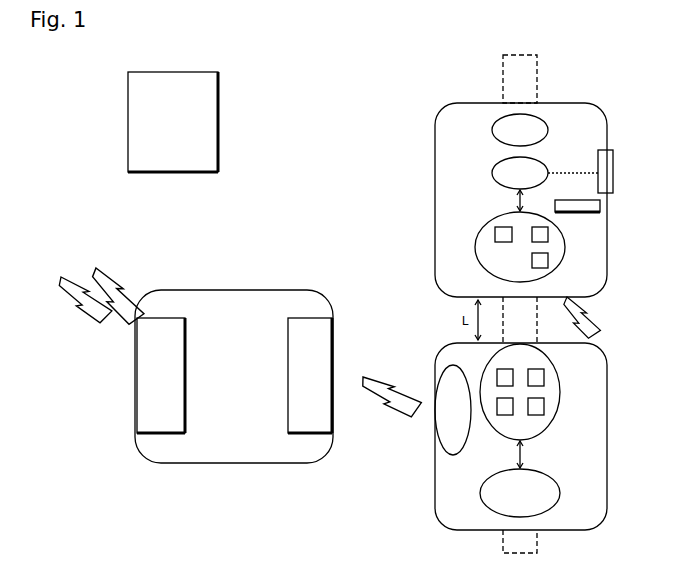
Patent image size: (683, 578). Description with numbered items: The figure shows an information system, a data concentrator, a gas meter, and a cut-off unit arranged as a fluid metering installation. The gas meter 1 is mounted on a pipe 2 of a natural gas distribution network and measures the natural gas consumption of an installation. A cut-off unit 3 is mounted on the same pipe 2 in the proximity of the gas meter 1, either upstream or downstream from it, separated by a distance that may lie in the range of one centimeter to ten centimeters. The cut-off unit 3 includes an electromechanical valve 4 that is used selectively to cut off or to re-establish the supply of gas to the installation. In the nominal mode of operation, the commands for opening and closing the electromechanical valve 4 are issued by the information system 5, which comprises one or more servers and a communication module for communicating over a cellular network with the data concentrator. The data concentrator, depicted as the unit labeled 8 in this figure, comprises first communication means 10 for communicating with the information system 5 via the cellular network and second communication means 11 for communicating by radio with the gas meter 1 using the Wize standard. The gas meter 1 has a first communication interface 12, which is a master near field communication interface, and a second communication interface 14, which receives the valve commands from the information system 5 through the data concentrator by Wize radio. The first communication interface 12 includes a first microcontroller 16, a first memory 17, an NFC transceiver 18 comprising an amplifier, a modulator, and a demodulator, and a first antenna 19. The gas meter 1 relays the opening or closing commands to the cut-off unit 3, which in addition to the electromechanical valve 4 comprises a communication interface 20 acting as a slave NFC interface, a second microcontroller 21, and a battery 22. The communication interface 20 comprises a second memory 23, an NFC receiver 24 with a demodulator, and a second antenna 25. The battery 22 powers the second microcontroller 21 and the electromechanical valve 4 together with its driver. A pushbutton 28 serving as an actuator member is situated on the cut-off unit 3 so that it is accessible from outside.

The gas meter 1 is at (607, 433).
The pipe 2 is at (537, 548).
The cut-off unit 3 is at (607, 252).
The electromechanical valve 4 is at (520, 130).
The information system 5 is at (173, 122).
The key fob 8 is at (232, 290).
The first communication means 10 is at (161, 375).
The second communication means 11 is at (310, 375).
The first communication interface 12 is at (558, 392).
The second communication interface 14 is at (453, 410).
The first microcontroller 16 is at (497, 421).
The first memory 17 is at (544, 407).
The NFC transceiver 18 is at (497, 378).
The first antenna 19 is at (544, 377).
The communication interface 20 is at (495, 257).
The second microcontroller 21 is at (520, 173).
The battery 22 is at (594, 212).
The second memory 23 is at (495, 234).
The NFC receiver 24 is at (548, 234).
The second antenna 25 is at (548, 262).
The pushbutton 28 is at (613, 188).